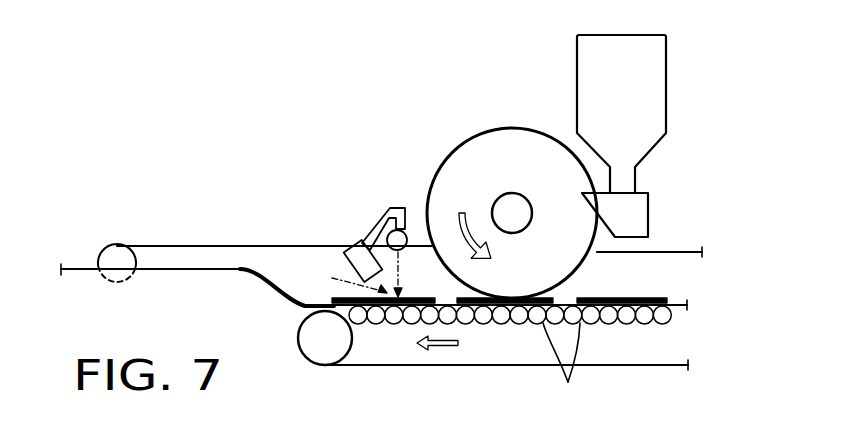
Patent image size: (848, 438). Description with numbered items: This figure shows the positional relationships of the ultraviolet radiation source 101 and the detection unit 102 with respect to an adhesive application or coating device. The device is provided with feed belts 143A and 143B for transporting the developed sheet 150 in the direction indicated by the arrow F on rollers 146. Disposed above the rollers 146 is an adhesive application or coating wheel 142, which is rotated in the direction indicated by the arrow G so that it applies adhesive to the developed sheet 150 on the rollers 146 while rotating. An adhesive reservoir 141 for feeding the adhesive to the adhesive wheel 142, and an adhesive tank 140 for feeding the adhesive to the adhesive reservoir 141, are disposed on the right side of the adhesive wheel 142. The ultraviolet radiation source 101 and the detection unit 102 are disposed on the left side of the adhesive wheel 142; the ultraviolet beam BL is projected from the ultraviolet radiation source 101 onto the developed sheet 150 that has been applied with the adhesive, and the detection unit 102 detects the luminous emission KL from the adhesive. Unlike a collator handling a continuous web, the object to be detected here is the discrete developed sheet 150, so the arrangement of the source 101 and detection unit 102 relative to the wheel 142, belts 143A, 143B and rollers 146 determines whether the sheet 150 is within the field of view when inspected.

The ultraviolet radiation source 101 is at (407, 229).
The detection unit 102 is at (343, 252).
The adhesive tank 140 is at (667, 91).
The adhesive reservoir 141 is at (648, 193).
The adhesive application or coating wheel 142 is at (503, 128).
The feed belt 143A is at (106, 247).
The feed belt 143B is at (461, 366).
The rollers 146 is at (571, 371).
The developed sheet 150 is at (662, 290).